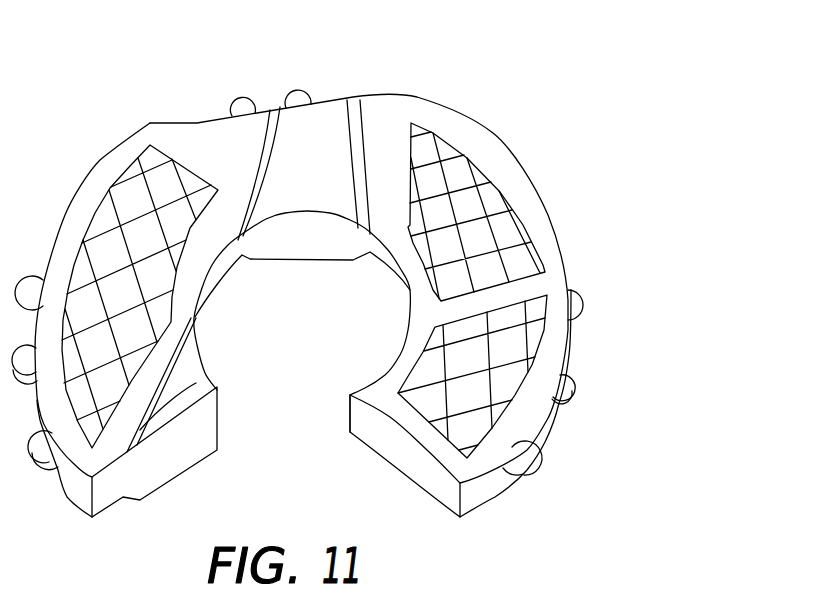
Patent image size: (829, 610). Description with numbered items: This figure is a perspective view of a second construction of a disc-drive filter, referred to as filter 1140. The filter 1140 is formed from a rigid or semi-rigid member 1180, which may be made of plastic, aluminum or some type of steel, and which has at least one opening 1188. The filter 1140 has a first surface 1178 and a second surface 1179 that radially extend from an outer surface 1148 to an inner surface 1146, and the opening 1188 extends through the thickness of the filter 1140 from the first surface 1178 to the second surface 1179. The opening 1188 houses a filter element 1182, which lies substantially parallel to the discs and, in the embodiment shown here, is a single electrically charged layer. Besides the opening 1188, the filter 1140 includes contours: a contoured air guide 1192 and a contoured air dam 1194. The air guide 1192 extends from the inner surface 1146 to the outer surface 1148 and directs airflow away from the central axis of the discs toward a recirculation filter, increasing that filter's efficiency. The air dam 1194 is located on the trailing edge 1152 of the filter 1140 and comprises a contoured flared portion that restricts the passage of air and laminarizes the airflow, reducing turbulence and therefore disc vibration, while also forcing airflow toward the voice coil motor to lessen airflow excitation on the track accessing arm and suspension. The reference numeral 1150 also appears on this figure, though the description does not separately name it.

The filter 1140 is at (516, 92).
The rigid or semi-rigid member 1180 is at (197, 145).
The contoured air guide 1192 is at (308, 143).
The opening 1188 is at (410, 208).
The filter element 1182 is at (467, 248).
The outer surface 1148 is at (570, 343).
The first surface 1178 is at (427, 300).
The inner surface 1146 is at (380, 377).
The second surface 1179 is at (363, 437).
The second leg end face 1150 is at (398, 448).
The trailing edge 1152 is at (183, 448).
The contoured air dam 1194 is at (196, 385).